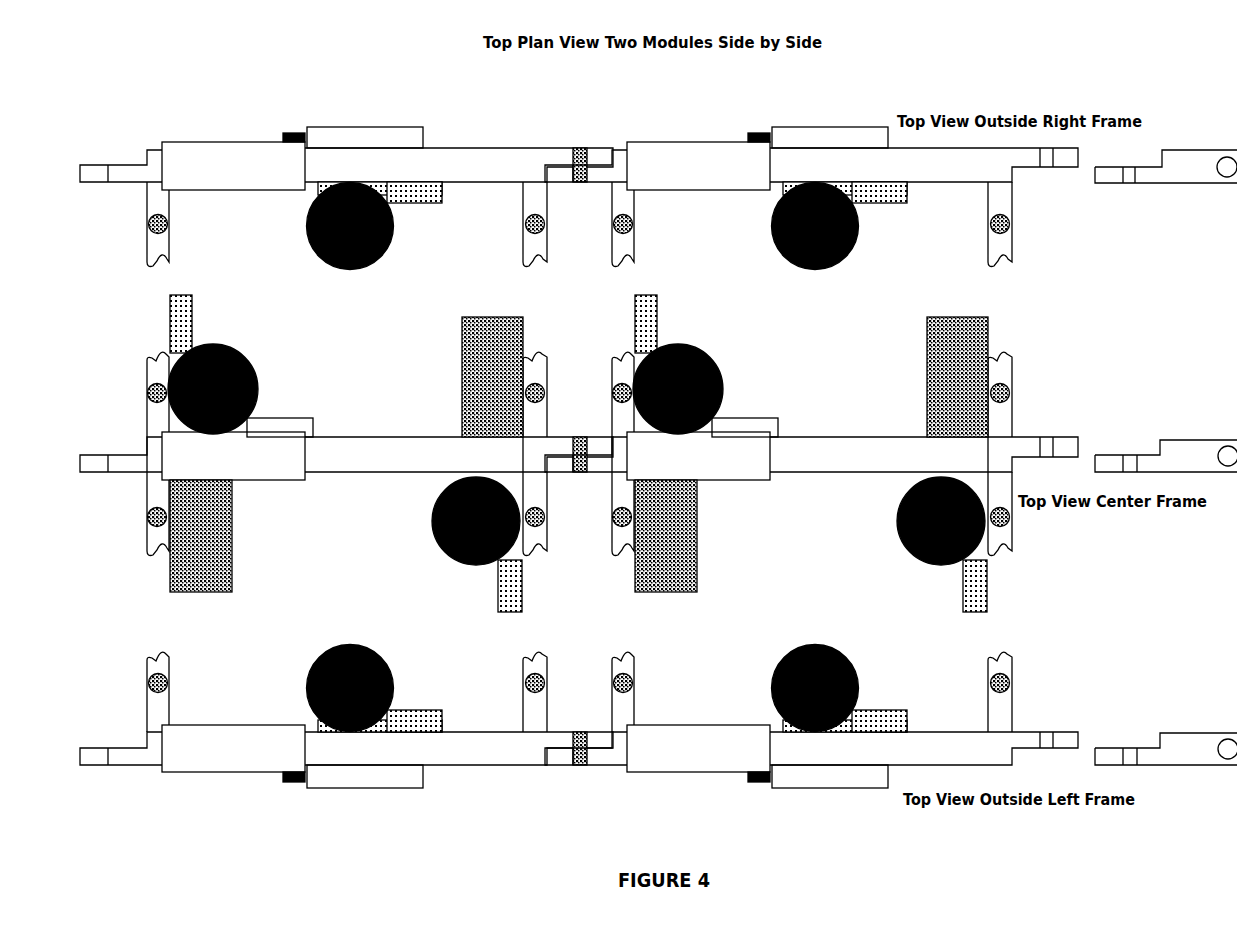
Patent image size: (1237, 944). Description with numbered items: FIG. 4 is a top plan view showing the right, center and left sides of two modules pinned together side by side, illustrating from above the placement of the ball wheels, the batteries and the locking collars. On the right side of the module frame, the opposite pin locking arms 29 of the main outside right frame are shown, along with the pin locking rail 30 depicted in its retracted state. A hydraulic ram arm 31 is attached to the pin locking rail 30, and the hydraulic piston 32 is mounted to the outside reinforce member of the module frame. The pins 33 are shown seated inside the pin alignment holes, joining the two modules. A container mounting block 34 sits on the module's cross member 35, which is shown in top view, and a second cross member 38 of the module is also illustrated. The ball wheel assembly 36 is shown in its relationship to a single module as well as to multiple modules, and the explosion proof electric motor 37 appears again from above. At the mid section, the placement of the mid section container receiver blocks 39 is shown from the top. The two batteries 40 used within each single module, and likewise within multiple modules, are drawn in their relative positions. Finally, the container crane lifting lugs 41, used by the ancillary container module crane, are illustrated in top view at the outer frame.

The pin locking arms 29 is at (116, 168).
The pin locking rail 30 is at (187, 152).
The hydraulic ram arm 31 is at (292, 132).
The hydraulic piston 32 is at (375, 135).
The pins 33 is at (578, 150).
The container mounting block 34 is at (148, 222).
The cross member 35 is at (167, 365).
The ball wheel assembly 36 is at (247, 352).
The explosion proof electric motor 37 is at (418, 205).
The second cross member 38 is at (530, 375).
The mid section container receiver blocks 39 is at (148, 395).
The batteries 40 is at (233, 523).
The container crane lifting lugs 41 is at (1187, 188).